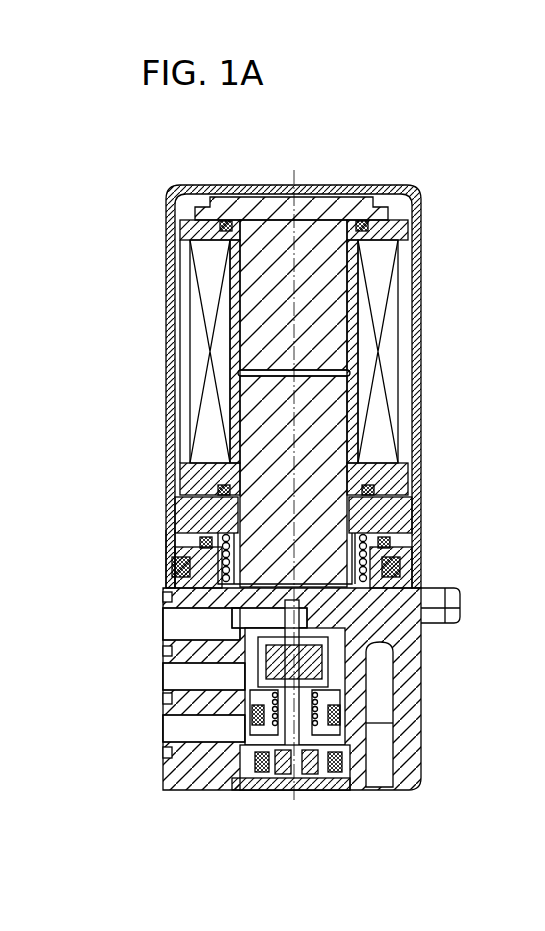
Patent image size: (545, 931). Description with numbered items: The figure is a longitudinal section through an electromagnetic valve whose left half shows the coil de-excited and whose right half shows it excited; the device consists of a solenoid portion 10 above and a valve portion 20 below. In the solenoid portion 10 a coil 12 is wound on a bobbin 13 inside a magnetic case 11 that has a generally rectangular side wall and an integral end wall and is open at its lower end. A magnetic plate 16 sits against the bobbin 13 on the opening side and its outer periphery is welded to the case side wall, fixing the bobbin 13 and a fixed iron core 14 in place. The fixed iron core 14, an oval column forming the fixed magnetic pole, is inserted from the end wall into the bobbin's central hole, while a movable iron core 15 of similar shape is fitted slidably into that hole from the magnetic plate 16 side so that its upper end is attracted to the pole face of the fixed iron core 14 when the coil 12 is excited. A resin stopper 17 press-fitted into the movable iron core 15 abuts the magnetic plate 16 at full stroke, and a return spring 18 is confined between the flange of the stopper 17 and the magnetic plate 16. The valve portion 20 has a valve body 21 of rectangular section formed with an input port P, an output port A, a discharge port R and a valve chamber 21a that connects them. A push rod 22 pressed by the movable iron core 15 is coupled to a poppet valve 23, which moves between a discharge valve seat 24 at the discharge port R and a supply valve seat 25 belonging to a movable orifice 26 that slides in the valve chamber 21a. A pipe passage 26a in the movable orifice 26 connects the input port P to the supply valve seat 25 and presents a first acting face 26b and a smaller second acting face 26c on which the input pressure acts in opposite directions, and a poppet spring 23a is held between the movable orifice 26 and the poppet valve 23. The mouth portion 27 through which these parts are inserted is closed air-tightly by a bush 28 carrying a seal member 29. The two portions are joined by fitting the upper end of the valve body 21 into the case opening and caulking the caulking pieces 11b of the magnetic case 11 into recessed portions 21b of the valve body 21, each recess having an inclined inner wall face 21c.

The solenoid portion 10 is at (281, 404).
The magnetic case 11 is at (322, 186).
The caulking piece 11b is at (415, 567).
The coil 12 is at (390, 345).
The bobbin 13 is at (380, 203).
The fixed iron core 14 is at (253, 220).
The movable iron core 15 is at (340, 400).
The magnetic plate 16 is at (413, 497).
The stopper 17 is at (405, 590).
The return spring 18 is at (413, 533).
The valve portion 20 is at (285, 717).
The valve body 21 is at (410, 780).
The valve chamber 21a is at (367, 724).
The recessed portion 21b is at (460, 608).
The inner wall face 21c is at (415, 563).
The push rod 22 is at (300, 592).
The poppet valve 23 is at (330, 670).
The poppet spring 23a is at (345, 700).
The discharge valve seat 24 is at (240, 612).
The supply valve seat 25 is at (172, 753).
The movable orifice 26 is at (368, 768).
The pipe passage 26a is at (275, 746).
The first acting face 26b is at (240, 735).
The second acting face 26c is at (245, 742).
The mouth portion 27 is at (340, 770).
The bush 28 is at (293, 770).
The seal member 29 is at (348, 768).
The discharge port R is at (178, 626).
The output port A is at (178, 676).
The input port P is at (180, 728).